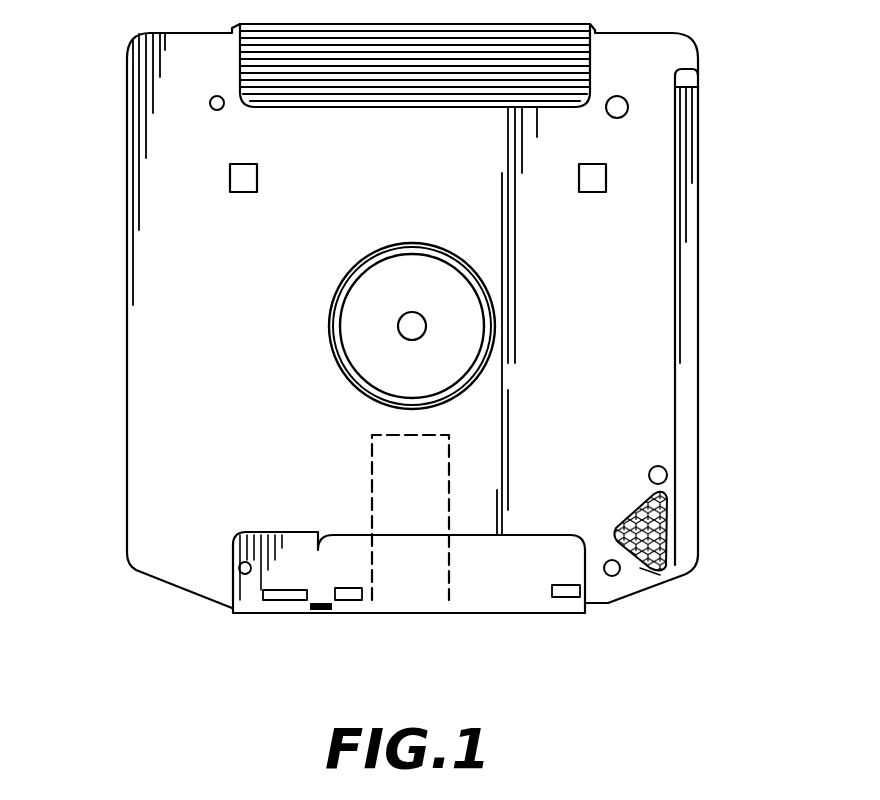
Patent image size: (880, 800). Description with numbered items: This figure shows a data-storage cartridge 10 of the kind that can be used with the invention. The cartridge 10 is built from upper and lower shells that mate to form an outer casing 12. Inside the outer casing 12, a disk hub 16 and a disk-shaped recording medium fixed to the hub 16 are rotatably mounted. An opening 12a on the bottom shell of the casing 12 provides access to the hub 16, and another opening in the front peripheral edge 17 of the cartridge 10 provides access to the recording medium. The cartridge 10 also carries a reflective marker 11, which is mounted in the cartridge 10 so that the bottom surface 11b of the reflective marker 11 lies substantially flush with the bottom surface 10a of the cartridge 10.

The data-storage cartridge 10 is at (713, 136).
The bottom surface 10a is at (658, 430).
The reflective marker 11 is at (613, 512).
The bottom surface 11b is at (660, 575).
The outer casing 12 is at (127, 345).
The opening 12a is at (333, 306).
The disk hub 16 is at (443, 272).
The front peripheral edge 17 is at (232, 611).